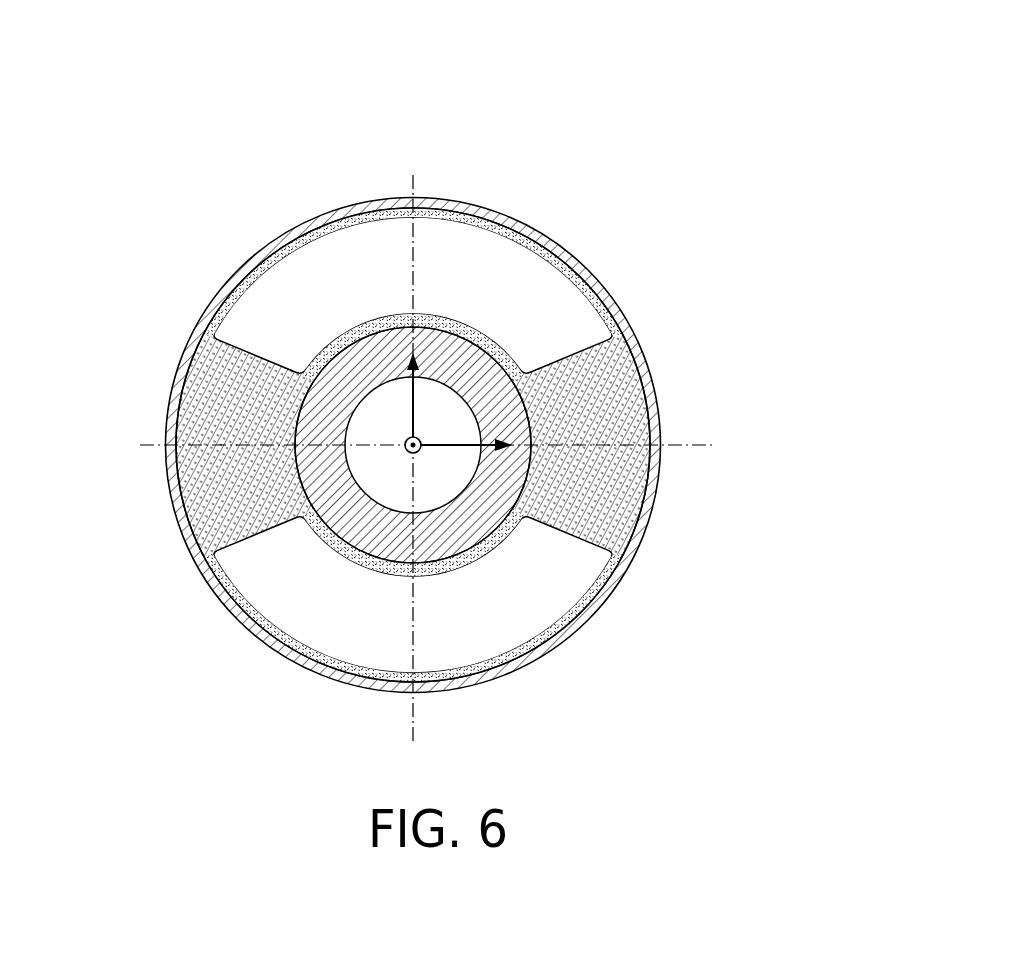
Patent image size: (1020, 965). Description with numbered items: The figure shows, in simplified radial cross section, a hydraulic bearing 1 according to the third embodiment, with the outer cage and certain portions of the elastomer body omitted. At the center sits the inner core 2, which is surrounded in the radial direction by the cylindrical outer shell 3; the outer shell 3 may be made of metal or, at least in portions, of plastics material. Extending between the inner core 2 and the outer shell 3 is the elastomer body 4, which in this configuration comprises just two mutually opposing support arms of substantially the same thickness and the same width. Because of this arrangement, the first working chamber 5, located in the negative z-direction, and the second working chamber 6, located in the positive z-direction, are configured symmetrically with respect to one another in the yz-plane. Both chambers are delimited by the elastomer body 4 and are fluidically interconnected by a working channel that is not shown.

The hydraulic bearing 1 is at (620, 137).
The inner core 2 is at (328, 418).
The outer shell 3 is at (342, 215).
The elastomer body 4 is at (572, 410).
The first working chamber 5 is at (317, 600).
The second working chamber 6 is at (487, 298).